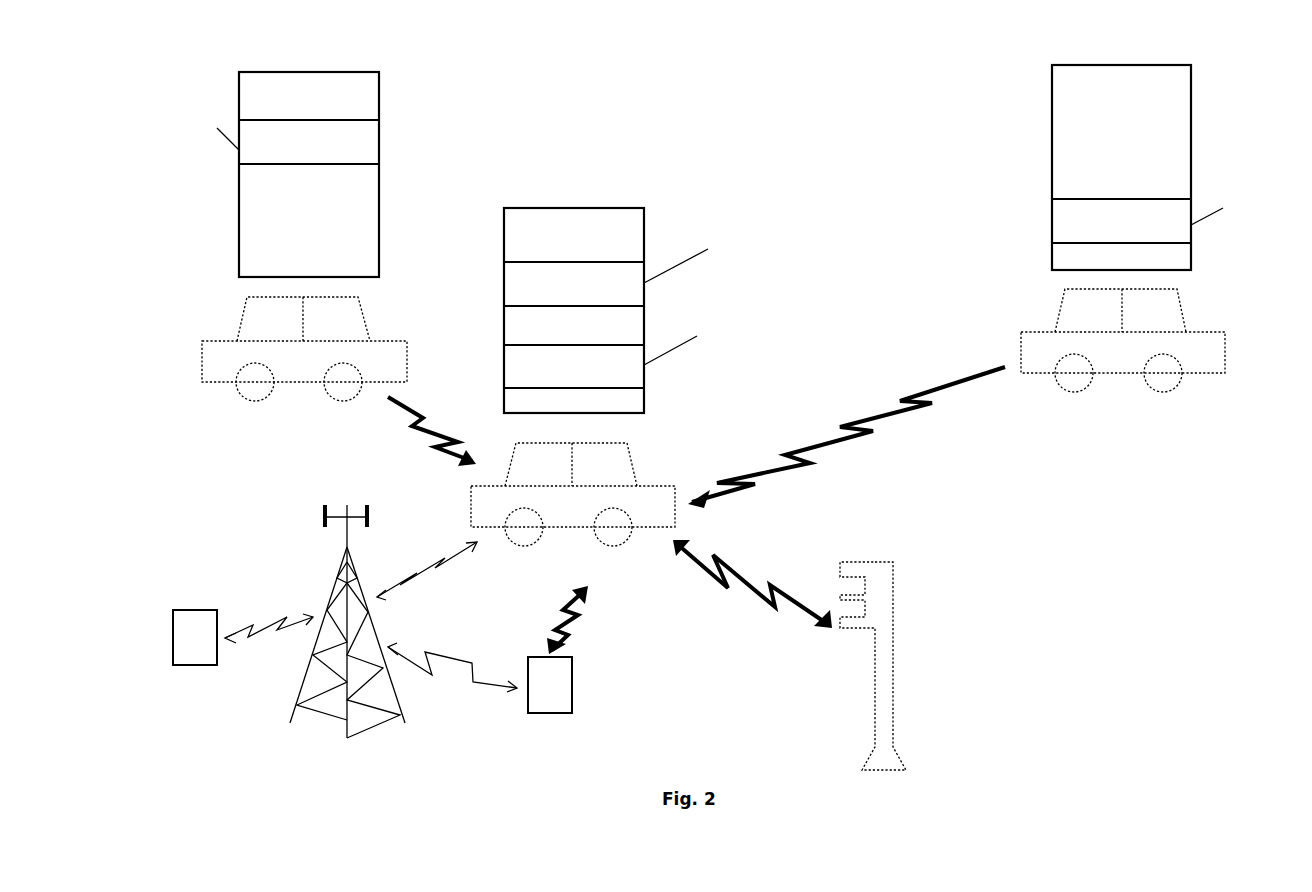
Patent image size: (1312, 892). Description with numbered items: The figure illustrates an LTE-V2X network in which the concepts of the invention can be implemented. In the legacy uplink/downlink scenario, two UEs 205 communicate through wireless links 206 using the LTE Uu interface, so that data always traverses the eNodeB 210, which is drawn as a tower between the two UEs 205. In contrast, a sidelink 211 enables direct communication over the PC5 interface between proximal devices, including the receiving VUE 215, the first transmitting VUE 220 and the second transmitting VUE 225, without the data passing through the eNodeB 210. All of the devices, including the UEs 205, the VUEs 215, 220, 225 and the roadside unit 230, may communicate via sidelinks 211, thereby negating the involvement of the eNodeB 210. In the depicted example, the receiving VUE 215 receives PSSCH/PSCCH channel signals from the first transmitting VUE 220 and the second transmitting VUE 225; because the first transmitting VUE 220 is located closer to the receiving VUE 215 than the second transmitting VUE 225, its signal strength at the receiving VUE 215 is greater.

The UE 205 is at (173, 627).
The wireless link 206 is at (267, 625).
The eNodeB 210 is at (333, 580).
The sidelink 211 is at (430, 427).
The receiving VUE 215 is at (630, 460).
The first transmitting VUE 220 is at (242, 316).
The second transmitting VUE 225 is at (1180, 315).
The roadside unit 230 is at (893, 657).